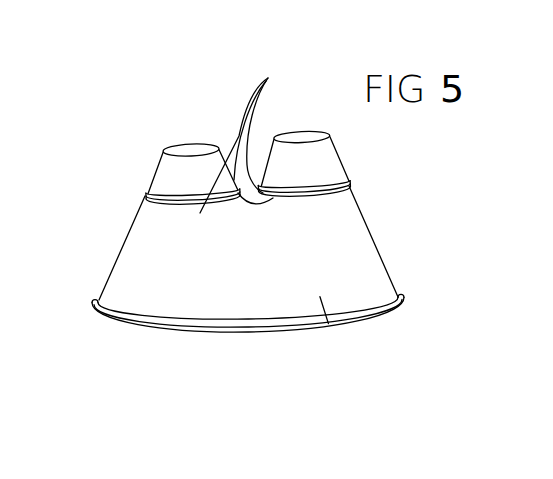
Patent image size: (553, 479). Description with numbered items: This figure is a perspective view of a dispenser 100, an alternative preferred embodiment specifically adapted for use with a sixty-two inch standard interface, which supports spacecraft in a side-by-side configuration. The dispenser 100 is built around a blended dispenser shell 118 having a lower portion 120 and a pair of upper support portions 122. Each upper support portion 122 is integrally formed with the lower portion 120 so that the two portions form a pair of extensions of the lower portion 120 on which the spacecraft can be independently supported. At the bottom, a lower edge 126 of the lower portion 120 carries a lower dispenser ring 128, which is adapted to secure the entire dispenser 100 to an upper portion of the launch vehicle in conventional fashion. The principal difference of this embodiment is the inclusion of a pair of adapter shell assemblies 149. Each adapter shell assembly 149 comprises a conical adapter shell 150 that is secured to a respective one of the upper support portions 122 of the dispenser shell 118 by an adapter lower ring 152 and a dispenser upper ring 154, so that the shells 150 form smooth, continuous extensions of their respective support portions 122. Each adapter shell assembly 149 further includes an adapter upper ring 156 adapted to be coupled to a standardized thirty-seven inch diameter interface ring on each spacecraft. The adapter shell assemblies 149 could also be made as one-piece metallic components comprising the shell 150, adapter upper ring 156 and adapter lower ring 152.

The dispenser 100 is at (450, 113).
The dispenser shell 118 is at (212, 316).
The lower portion 120 is at (370, 265).
The upper support portions 122 is at (258, 138).
The lower edge 126 is at (394, 295).
The lower dispenser ring 128 is at (325, 325).
The adapter shell assemblies 149 is at (122, 163).
The conical adapter shell 150 is at (167, 163).
The adapter lower ring 152 is at (145, 193).
The dispenser upper ring 154 is at (145, 202).
The adapter upper ring 156 is at (181, 147).